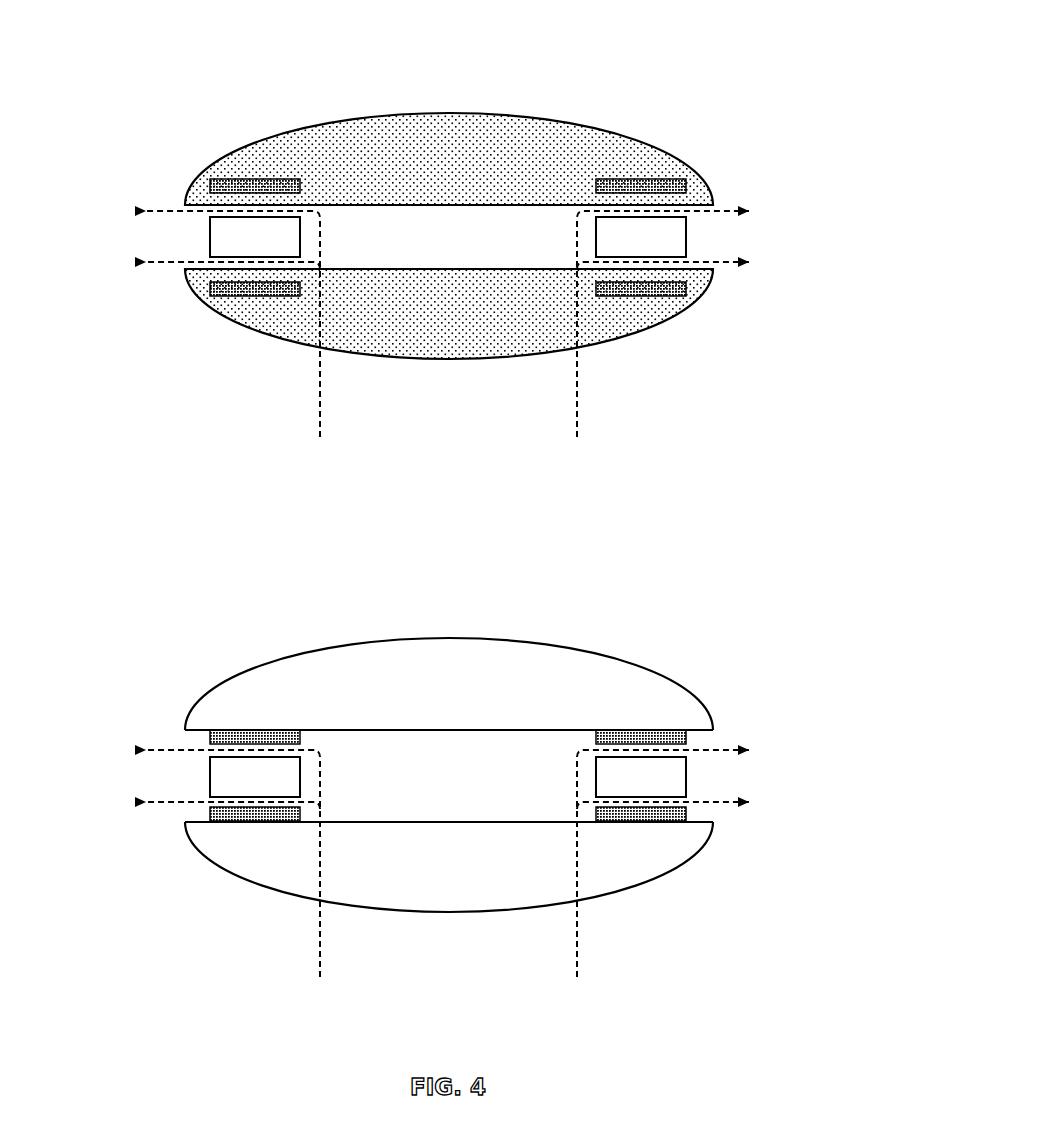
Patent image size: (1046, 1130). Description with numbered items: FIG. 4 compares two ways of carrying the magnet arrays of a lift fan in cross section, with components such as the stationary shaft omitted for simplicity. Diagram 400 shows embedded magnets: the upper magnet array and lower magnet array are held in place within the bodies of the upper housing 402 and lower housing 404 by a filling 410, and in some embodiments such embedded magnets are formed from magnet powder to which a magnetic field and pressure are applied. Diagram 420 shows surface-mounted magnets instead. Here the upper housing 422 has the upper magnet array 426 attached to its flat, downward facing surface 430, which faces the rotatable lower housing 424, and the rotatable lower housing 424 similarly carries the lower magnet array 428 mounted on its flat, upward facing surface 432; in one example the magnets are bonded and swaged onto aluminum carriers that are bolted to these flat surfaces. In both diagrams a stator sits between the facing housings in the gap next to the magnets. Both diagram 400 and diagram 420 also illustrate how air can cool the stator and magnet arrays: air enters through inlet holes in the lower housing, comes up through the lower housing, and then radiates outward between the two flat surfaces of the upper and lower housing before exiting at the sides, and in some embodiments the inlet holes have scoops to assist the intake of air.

The diagram 400 is at (679, 35).
The upper housing 402 is at (452, 113).
The lower housing 404 is at (448, 359).
The filling 410 is at (580, 134).
The diagram 420 is at (679, 560).
The upper housing 422 is at (452, 638).
The rotatable lower housing 424 is at (448, 912).
The upper magnet array 426 is at (255, 730).
The lower magnet array 428 is at (255, 821).
The flat, downward facing surface 430 is at (452, 729).
The flat, upward facing surface 432 is at (452, 821).